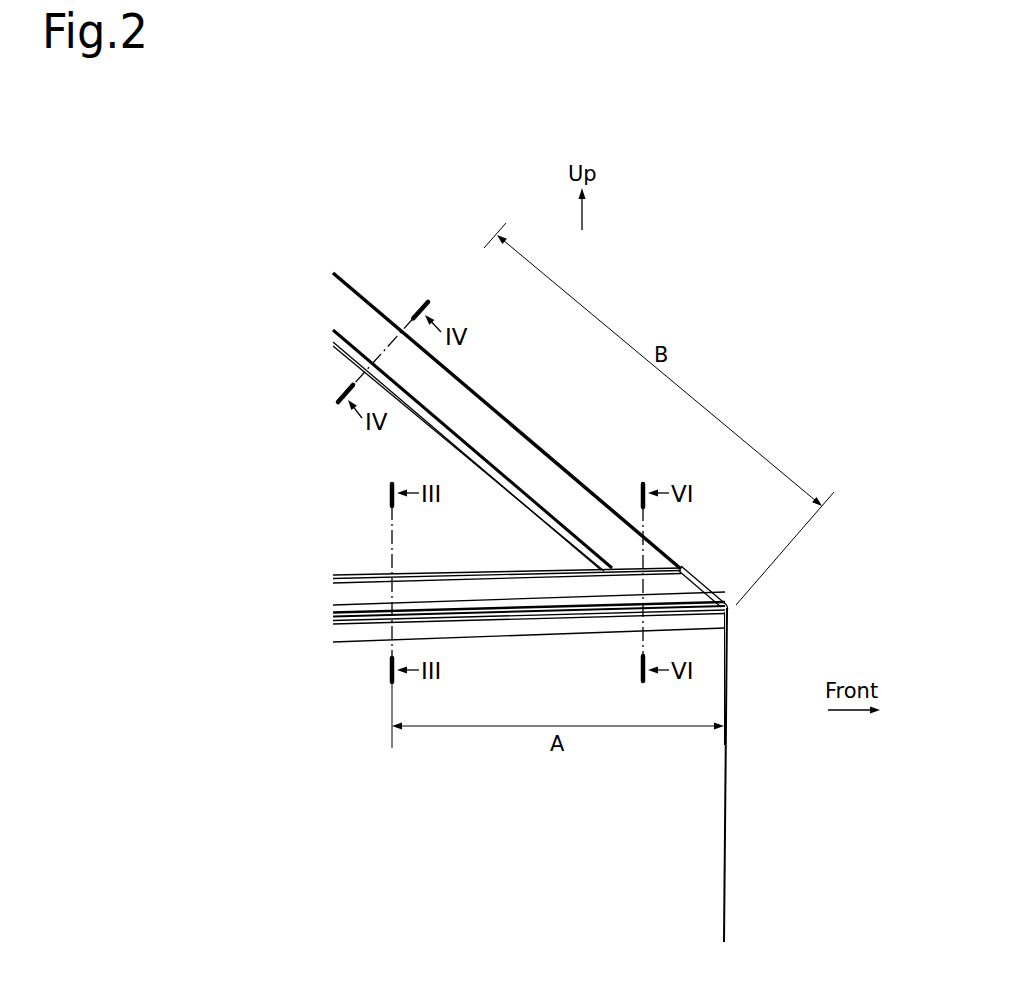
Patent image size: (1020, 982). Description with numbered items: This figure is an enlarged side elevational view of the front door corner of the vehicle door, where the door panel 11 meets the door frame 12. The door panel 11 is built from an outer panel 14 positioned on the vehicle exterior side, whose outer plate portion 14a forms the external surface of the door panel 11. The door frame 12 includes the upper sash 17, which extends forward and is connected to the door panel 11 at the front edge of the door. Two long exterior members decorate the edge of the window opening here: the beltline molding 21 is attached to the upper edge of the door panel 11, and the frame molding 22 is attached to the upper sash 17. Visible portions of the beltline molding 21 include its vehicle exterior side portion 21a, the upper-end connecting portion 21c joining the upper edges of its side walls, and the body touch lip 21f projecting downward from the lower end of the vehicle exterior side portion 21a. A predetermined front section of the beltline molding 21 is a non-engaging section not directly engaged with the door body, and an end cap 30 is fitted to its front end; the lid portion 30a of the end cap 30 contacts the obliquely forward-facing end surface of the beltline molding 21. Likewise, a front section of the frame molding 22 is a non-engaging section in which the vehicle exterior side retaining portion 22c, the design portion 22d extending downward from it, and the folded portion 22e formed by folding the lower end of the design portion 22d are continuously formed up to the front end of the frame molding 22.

The door panel 11 is at (787, 775).
The outer panel 14 is at (738, 769).
The door frame 12 is at (507, 398).
The upper sash 17 is at (349, 272).
The outer plate portion 14a is at (370, 672).
The beltline molding 21 is at (374, 566).
The vehicle exterior side portion 21a is at (433, 593).
The upper-end connecting portion 21c is at (495, 572).
The body touch lip 21f is at (499, 614).
The frame molding 22 is at (548, 444).
The vehicle exterior side retaining portion 22c is at (578, 477).
The design portion 22d is at (478, 419).
The folded portion 22e is at (463, 452).
The end cap 30 is at (719, 590).
The lid portion 30a is at (692, 576).